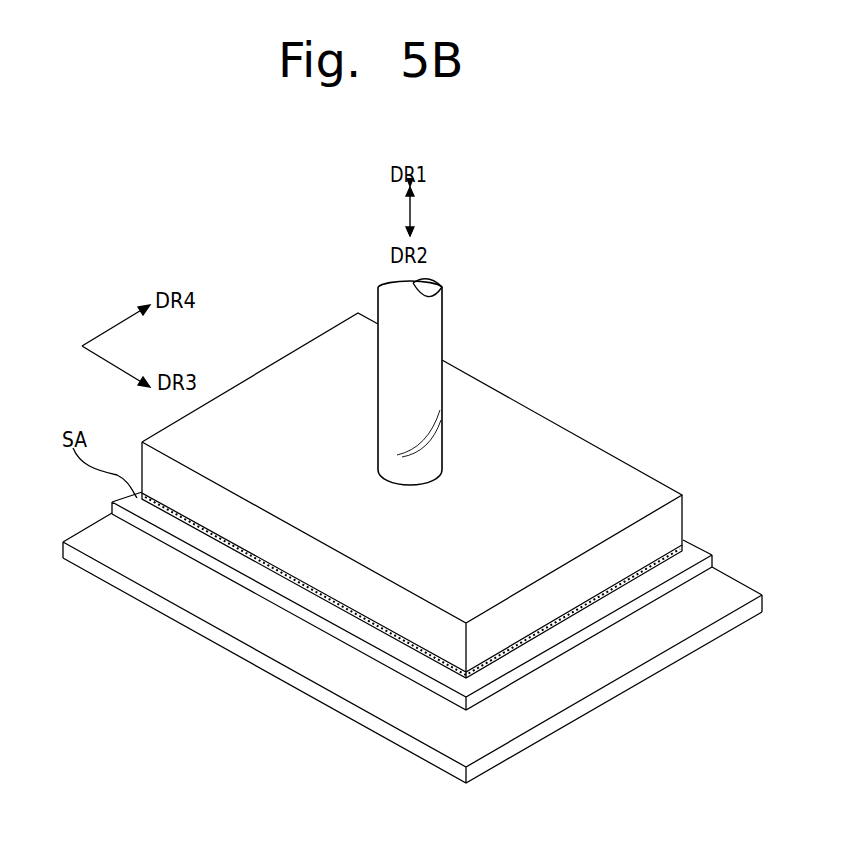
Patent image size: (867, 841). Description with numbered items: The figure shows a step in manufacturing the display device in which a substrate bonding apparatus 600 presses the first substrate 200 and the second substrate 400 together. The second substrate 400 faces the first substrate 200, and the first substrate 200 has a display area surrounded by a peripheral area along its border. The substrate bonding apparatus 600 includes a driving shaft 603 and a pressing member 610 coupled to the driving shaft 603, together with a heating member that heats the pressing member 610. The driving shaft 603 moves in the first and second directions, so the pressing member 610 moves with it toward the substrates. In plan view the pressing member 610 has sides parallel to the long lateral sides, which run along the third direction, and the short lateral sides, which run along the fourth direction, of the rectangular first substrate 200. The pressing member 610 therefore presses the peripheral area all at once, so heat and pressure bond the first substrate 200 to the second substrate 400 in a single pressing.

The first substrate 200 is at (713, 632).
The second substrate 400 is at (592, 630).
The substrate bonding apparatus 600 is at (573, 427).
The driving shaft 603 is at (430, 318).
The pressing member 610 is at (673, 562).